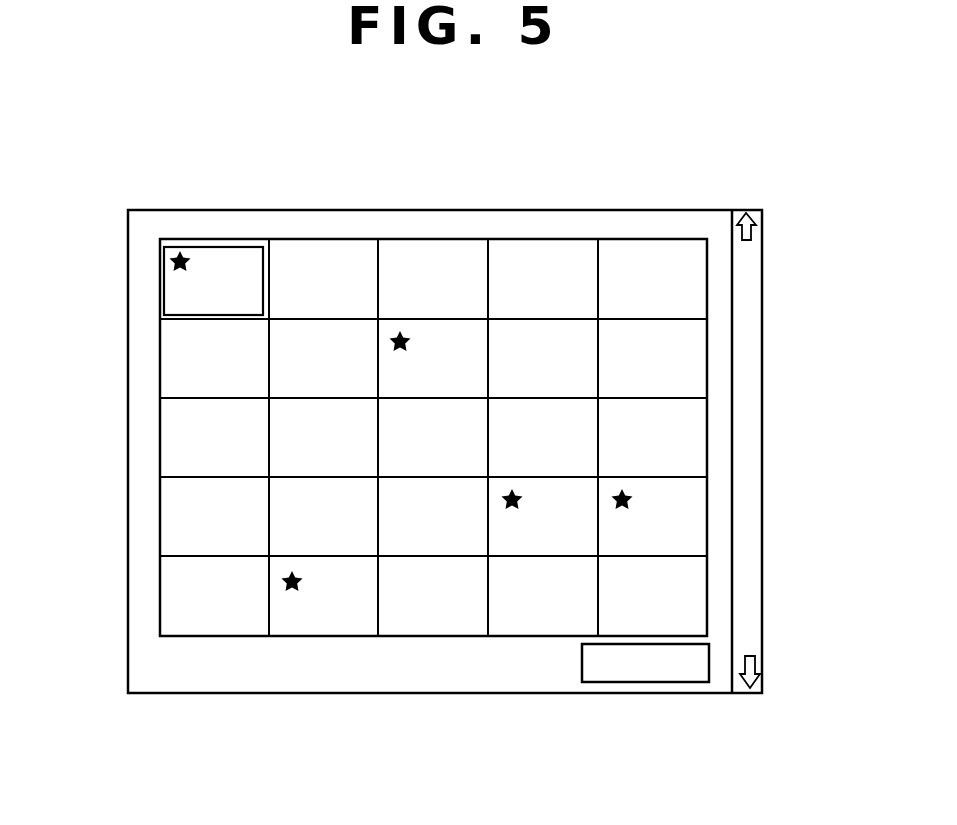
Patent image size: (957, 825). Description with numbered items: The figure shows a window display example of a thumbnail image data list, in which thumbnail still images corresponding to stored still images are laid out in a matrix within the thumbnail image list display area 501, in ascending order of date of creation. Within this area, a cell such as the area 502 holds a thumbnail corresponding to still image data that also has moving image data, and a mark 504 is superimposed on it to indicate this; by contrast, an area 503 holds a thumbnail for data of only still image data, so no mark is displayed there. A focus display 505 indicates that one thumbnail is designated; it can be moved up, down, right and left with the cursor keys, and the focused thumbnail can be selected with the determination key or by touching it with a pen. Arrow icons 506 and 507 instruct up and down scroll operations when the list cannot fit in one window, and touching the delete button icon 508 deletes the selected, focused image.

The thumbnail image list display area 501 is at (444, 238).
The area displaying thumbnail image data having moving image data 502 is at (248, 258).
The area displaying thumbnail image data of only still image data 503 is at (346, 258).
The mark 504 is at (180, 251).
The focus display 505 is at (163, 294).
The up scroll arrow icon 506 is at (752, 232).
The down scroll arrow icon 507 is at (760, 663).
The delete button icon 508 is at (641, 684).